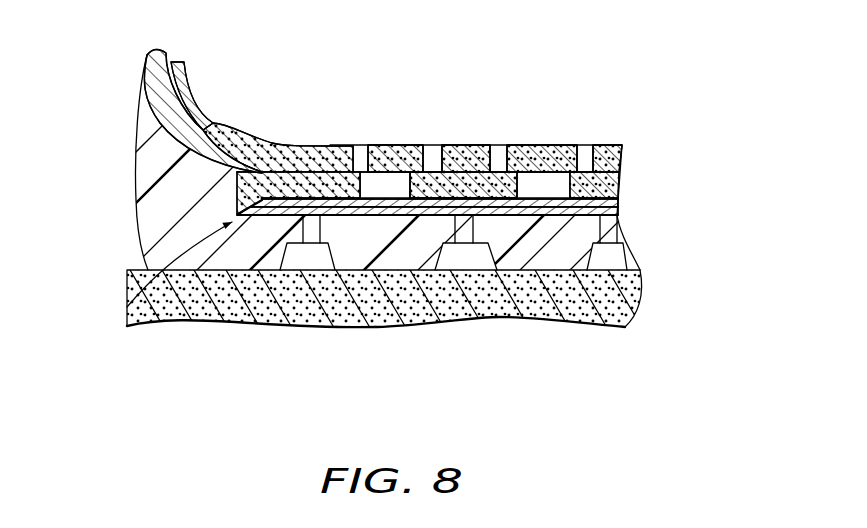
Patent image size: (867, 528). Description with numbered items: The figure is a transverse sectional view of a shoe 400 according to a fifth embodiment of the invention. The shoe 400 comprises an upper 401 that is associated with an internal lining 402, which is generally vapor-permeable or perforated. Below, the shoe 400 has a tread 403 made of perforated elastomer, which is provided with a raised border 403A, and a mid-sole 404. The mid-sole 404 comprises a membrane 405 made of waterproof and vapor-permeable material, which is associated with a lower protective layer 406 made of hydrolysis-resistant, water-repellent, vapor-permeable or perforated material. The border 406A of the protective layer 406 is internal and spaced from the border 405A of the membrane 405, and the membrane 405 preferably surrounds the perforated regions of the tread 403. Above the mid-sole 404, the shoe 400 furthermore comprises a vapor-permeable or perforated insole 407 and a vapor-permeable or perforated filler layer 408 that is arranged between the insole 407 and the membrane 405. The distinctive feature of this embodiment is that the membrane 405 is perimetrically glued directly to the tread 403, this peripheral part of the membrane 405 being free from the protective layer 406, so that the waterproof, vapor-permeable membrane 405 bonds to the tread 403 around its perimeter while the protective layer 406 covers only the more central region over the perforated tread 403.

The shoe 400 is at (133, 43).
The upper 401 is at (146, 80).
The internal lining 402 is at (184, 83).
The tread 403 is at (215, 262).
The raised border 403A is at (137, 172).
The mid-sole 404 is at (127, 306).
The membrane 405 is at (387, 198).
The border of the membrane 405A is at (303, 168).
The lower protective layer 406 is at (388, 212).
The border of the protective layer 406A is at (327, 247).
The insole 407 is at (535, 145).
The filler layer 408 is at (595, 183).